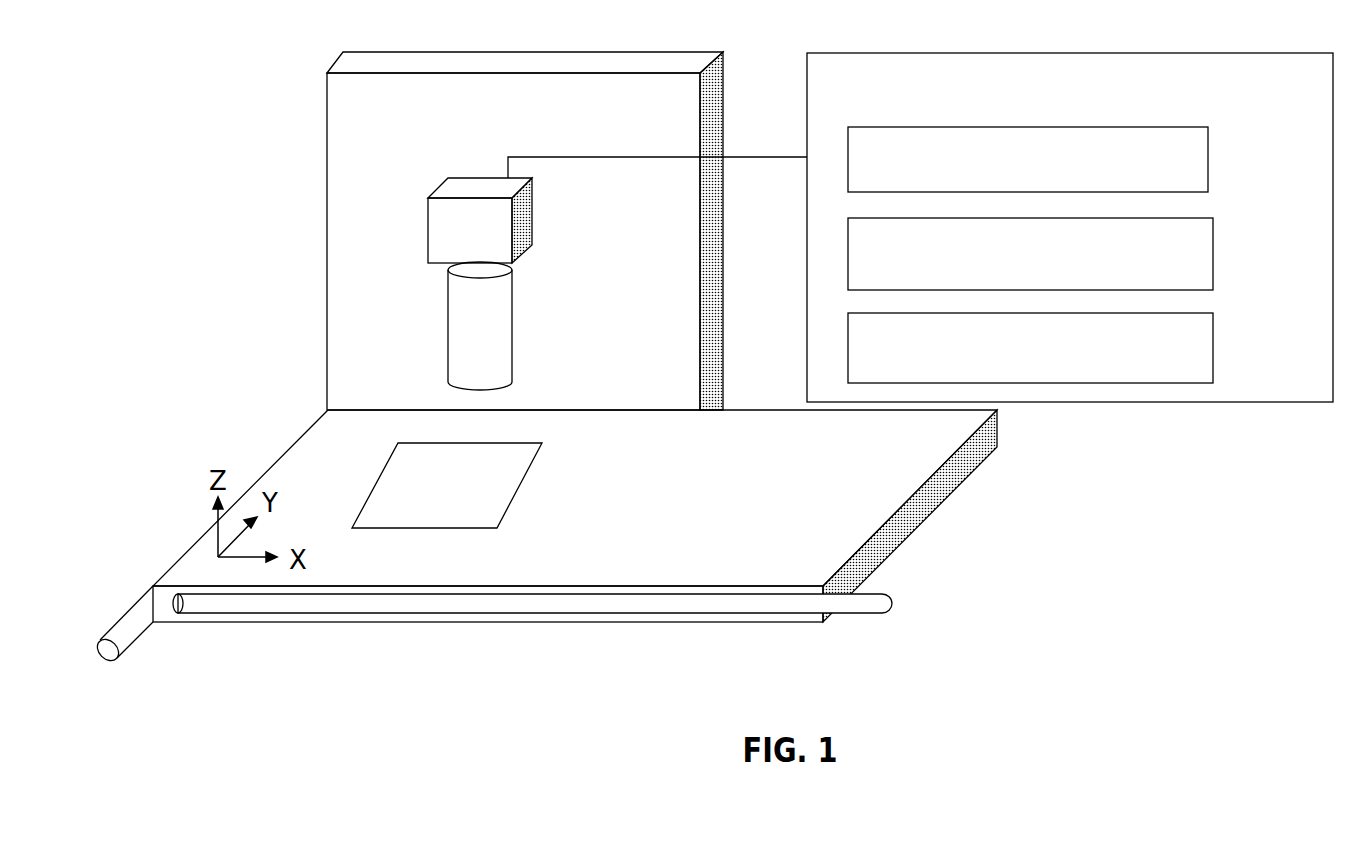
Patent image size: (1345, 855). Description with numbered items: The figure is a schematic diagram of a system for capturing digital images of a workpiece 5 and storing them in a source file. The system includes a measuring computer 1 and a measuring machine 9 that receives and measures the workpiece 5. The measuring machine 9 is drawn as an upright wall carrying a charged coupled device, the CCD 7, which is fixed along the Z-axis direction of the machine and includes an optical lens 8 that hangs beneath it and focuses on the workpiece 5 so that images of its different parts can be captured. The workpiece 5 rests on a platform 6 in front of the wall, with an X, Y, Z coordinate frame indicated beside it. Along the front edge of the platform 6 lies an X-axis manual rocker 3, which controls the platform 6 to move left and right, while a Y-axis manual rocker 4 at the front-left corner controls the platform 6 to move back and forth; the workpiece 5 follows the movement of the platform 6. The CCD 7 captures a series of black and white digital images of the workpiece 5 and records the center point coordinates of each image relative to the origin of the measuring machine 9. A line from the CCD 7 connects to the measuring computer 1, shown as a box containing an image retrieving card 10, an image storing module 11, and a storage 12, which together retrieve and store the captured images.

The measuring computer 1 is at (1058, 53).
The X-axis manual rocker 3 is at (893, 607).
The Y-axis manual rocker 4 is at (145, 638).
The workpiece 5 is at (527, 475).
The platform 6 is at (987, 453).
The charged coupled device 7 is at (428, 200).
The optical lens 8 is at (447, 332).
The measuring machine 9 is at (327, 170).
The image retrieving card 10 is at (1208, 152).
The image storing module 11 is at (1213, 255).
The storage 12 is at (1213, 348).